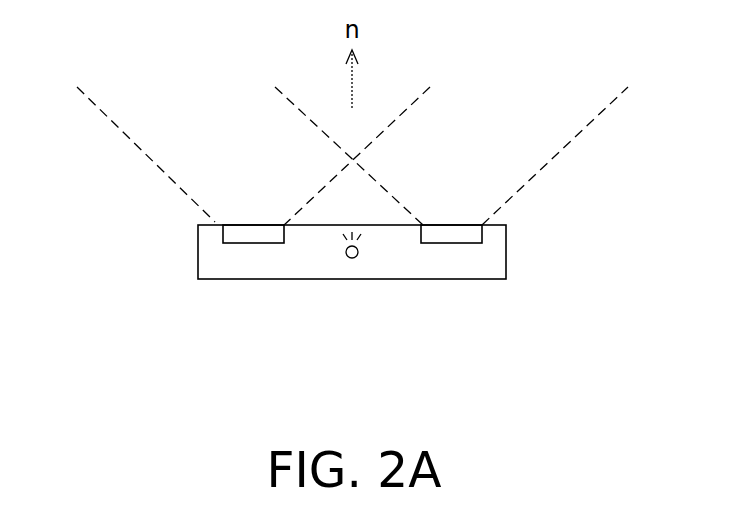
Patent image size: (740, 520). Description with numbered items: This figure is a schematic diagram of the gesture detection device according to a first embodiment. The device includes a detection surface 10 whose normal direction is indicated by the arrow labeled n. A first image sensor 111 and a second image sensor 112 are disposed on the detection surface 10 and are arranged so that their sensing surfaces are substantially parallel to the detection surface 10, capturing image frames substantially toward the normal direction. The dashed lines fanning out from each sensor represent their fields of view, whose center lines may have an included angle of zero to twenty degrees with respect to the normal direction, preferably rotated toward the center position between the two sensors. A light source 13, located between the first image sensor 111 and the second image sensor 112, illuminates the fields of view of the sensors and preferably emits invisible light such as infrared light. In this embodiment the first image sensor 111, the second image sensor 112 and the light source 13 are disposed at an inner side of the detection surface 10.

The detection surface 10 is at (205, 225).
The first image sensor 111 is at (225, 243).
The second image sensor 112 is at (473, 243).
The light source 13 is at (352, 258).